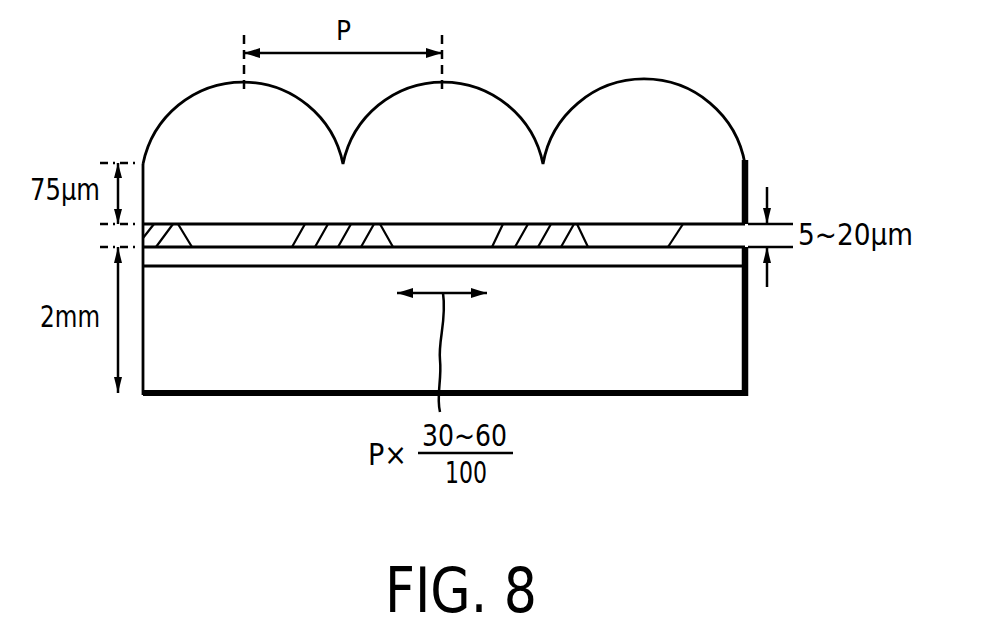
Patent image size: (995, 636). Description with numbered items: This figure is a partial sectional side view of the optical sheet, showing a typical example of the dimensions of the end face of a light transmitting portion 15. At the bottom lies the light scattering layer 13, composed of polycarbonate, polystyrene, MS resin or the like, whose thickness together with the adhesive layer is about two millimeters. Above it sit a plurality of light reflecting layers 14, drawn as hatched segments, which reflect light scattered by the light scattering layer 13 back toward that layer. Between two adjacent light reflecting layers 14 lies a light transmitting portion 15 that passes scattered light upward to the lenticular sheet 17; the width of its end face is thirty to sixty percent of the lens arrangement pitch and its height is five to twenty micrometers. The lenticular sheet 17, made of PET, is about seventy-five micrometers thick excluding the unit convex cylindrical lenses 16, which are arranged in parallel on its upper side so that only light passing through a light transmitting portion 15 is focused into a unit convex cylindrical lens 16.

The light scattering layer 13 is at (725, 340).
The light reflecting layer 14 is at (342, 232).
The light transmitting portion 15 is at (447, 235).
The unit convex cylindrical lens 16 is at (705, 102).
The lenticular sheet 17 is at (725, 148).